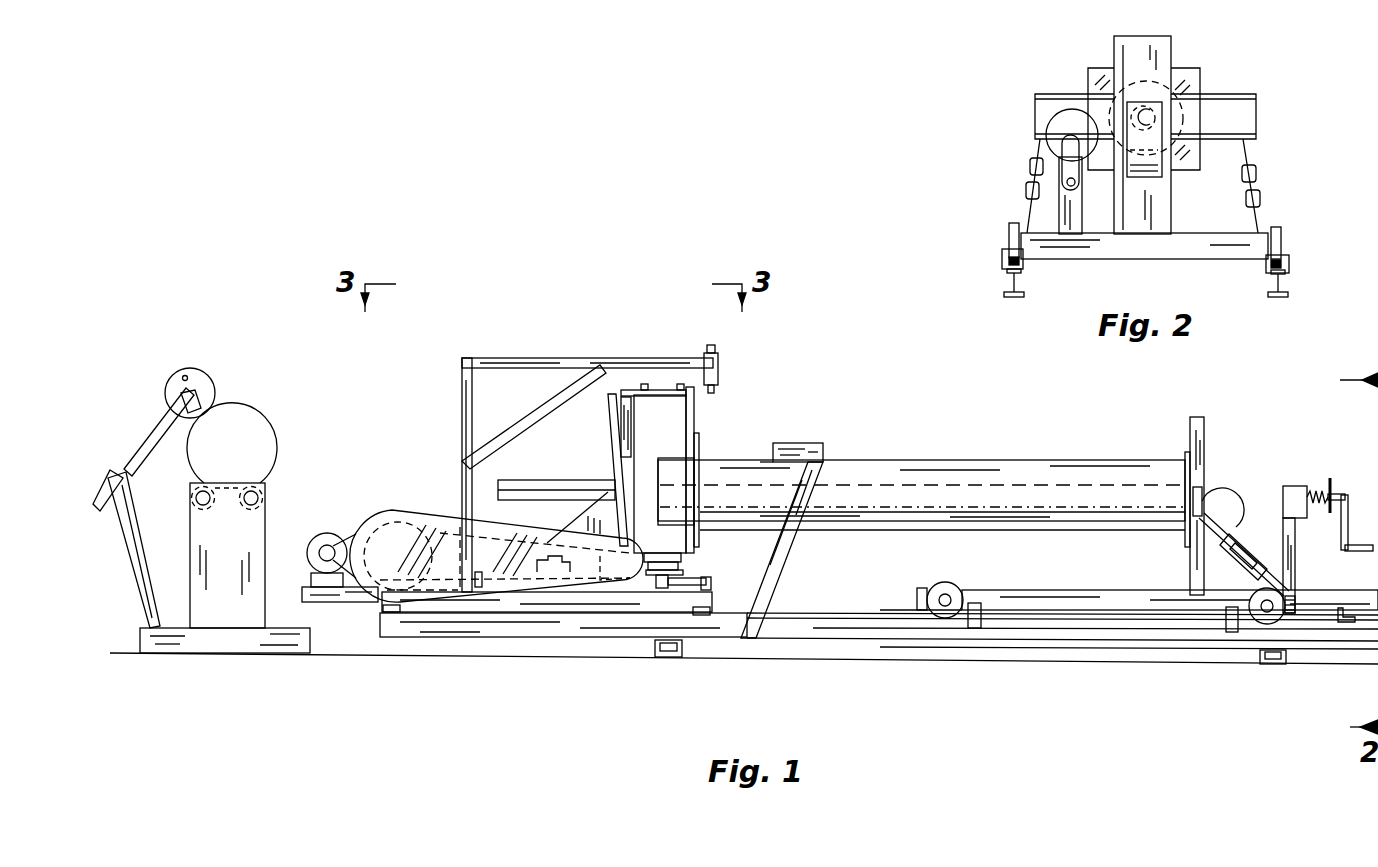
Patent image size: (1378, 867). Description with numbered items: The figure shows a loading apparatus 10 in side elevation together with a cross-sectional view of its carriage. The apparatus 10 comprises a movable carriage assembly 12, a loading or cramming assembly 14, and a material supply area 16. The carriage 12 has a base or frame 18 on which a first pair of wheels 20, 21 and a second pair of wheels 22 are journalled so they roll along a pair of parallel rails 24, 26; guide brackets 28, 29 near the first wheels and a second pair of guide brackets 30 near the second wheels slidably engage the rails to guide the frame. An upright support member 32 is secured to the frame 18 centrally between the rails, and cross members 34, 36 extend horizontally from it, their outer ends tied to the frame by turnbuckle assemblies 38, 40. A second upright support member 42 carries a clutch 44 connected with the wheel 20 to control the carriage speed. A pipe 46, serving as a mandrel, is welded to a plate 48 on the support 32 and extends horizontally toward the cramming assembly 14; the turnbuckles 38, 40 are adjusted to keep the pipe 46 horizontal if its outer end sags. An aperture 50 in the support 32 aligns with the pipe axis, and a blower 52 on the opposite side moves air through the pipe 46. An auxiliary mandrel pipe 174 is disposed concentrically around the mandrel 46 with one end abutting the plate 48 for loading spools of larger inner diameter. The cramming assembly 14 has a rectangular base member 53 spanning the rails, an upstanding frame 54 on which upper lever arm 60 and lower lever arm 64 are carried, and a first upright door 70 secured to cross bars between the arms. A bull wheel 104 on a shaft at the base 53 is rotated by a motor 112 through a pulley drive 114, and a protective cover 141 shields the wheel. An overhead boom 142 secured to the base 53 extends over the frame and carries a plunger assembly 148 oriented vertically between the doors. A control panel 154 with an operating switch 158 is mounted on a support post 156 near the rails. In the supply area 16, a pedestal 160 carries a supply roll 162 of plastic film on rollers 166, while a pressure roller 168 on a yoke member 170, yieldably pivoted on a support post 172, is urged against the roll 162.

In FIG. 1, the loading apparatus 10 is at (800, 384).
In FIG. 1, the movable carriage assembly 12 is at (1250, 427).
In FIG. 1, the loading or cramming assembly 14 is at (615, 437).
In FIG. 1, the material supply area 16 is at (240, 390).
In FIG. 2, the base or frame 18 is at (1205, 250).
In FIG. 1, the wheel 20 is at (1290, 592).
In FIG. 2, the wheel 20 is at (1006, 230).
In FIG. 2, the wheel 21 is at (1282, 228).
In FIG. 1, the wheel 22 is at (935, 588).
In FIG. 2, the rail 24 is at (1014, 298).
In FIG. 2, the rail 26 is at (1280, 298).
In FIG. 1, the guide bracket 28 is at (1232, 632).
In FIG. 2, the guide bracket 28 is at (1000, 258).
In FIG. 2, the guide bracket 29 is at (1290, 263).
In FIG. 1, the guide bracket 30 is at (976, 632).
In FIG. 1, the upright channel or support member 32 is at (1206, 420).
In FIG. 2, the upright channel or support member 32 is at (1172, 45).
In FIG. 1, the cross member 34 is at (1206, 490).
In FIG. 2, the cross member 34 is at (1040, 110).
In FIG. 2, the cross member 36 is at (1250, 125).
In FIG. 1, the turnbuckle assembly 38 is at (1262, 537).
In FIG. 2, the turnbuckle assembly 38 is at (1030, 172).
In FIG. 2, the turnbuckle assembly 40 is at (1258, 183).
In FIG. 1, the second upright channel or support member 42 is at (1296, 556).
In FIG. 2, the second upright channel or support member 42 is at (1065, 212).
In FIG. 1, the clutch 44 is at (1300, 488).
In FIG. 1, the sleeve or pipe (mandrel) 46 is at (580, 488).
In FIG. 1, the plate 48 is at (1188, 452).
In FIG. 2, the plate 48 is at (1190, 72).
In FIG. 2, the aperture 50 is at (1187, 112).
In FIG. 1, the fan or blower 52 is at (1232, 505).
In FIG. 2, the fan or blower 52 is at (1140, 165).
In FIG. 1, the support base member 53 is at (630, 598).
In FIG. 1, the upstanding rectangular frame 54 is at (618, 426).
In FIG. 1, the upper lever arm 60 is at (658, 398).
In FIG. 1, the lower lever arm 64 is at (682, 533).
In FIG. 1, the first upright door 70 is at (697, 415).
In FIG. 1, the first bull wheel 104 is at (410, 500).
In FIG. 1, the motor 112 is at (320, 540).
In FIG. 1, the pulley drive 114 is at (343, 540).
In FIG. 1, the protective cover 141 is at (485, 496).
In FIG. 1, the overhead arm or boom 142 is at (512, 352).
In FIG. 1, the plunger assembly 148 is at (720, 364).
In FIG. 1, the control panel 154 is at (795, 434).
In FIG. 1, the support post 156 is at (786, 568).
In FIG. 1, the operating switch 158 is at (816, 441).
In FIG. 1, the pedestal 160 is at (207, 630).
In FIG. 1, the supply roll 162 is at (265, 432).
In FIG. 1, the rollers 166 is at (192, 489).
In FIG. 1, the pressure roller 168 is at (200, 383).
In FIG. 1, the yoke member 170 is at (176, 418).
In FIG. 1, the support post 172 is at (140, 590).
In FIG. 1, the auxiliary mandrel pipe 174 is at (986, 458).
In FIG. 2, the auxiliary mandrel pipe 174 is at (1120, 80).